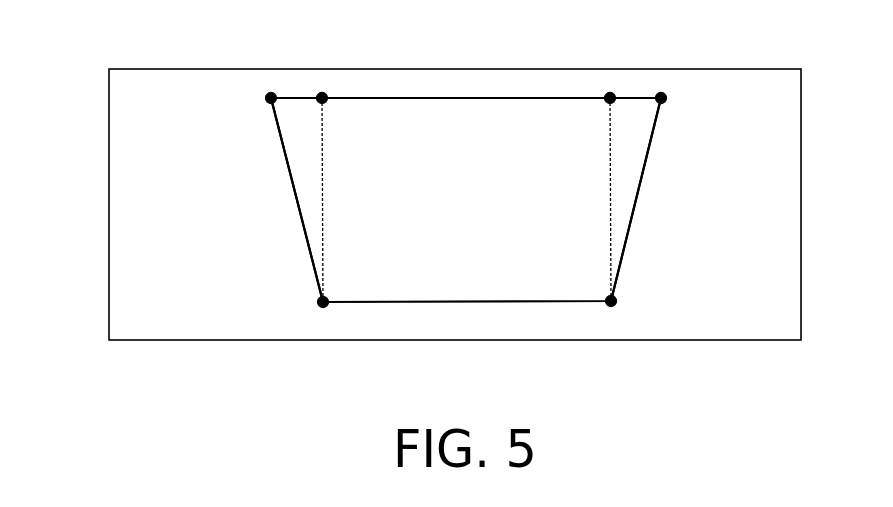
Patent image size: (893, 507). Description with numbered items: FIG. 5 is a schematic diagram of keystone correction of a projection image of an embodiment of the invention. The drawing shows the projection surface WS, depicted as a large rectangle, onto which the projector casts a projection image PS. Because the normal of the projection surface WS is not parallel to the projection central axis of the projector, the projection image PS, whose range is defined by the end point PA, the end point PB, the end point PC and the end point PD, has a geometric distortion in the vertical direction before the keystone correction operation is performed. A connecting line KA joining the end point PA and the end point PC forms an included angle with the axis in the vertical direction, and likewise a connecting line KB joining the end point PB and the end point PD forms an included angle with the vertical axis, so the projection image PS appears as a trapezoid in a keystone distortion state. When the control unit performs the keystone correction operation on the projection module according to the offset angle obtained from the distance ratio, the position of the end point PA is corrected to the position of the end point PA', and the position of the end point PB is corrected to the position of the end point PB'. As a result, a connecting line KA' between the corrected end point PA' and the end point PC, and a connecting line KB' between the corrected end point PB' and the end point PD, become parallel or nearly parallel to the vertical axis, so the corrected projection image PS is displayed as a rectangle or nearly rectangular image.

The projection surface WS is at (747, 100).
The projection image PS is at (442, 135).
The end point PA is at (261, 64).
The end point PA' is at (335, 64).
The end point PB is at (671, 64).
The end point PB' is at (601, 64).
The end point PC is at (321, 307).
The end point PD is at (613, 306).
The connecting line KA is at (279, 200).
The connecting line KA' is at (359, 200).
The connecting line KB is at (654, 199).
The connecting line KB' is at (573, 199).